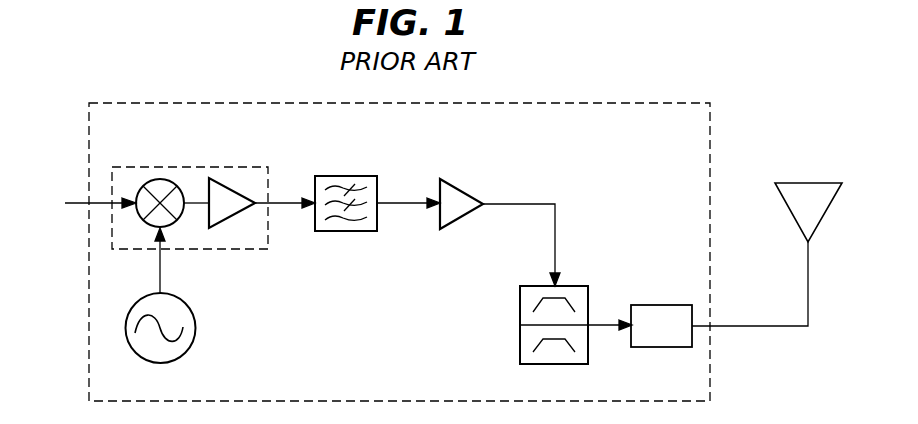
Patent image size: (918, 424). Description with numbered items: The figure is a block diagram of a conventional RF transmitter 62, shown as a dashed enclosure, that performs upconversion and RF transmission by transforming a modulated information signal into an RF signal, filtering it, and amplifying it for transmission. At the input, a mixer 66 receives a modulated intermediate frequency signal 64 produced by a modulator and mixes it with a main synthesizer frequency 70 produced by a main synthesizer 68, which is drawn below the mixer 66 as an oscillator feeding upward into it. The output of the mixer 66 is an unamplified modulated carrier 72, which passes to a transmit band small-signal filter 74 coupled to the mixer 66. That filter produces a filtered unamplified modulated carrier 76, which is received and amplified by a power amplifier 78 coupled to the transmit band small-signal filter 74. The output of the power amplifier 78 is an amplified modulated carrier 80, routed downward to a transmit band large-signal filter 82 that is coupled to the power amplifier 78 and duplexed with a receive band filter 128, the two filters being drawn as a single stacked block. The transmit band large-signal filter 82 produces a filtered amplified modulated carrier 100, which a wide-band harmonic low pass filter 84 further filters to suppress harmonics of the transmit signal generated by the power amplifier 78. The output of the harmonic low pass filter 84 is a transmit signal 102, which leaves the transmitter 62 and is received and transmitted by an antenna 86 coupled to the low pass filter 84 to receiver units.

The RF transmitter 62 is at (130, 395).
The modulated intermediate frequency (IF) signal 64 is at (56, 215).
The mixer 66 is at (165, 168).
The main synthesizer 68 is at (196, 333).
The main synthesizer frequency 70 is at (160, 266).
The unamplified modulated carrier 72 is at (287, 200).
The transmit band small-signal filter 74 is at (358, 176).
The filtered unamplified modulated carrier 76 is at (405, 200).
The power amplifier 78 is at (463, 190).
The amplified modulated carrier 80 is at (555, 236).
The transmit band large-signal filter 82 is at (520, 306).
The wide-band harmonic low pass filter 84 is at (660, 305).
The antenna 86 is at (795, 224).
The filtered amplified modulated carrier 100 is at (600, 330).
The transmit signal 102 is at (808, 275).
The receive band filter 128 is at (520, 340).